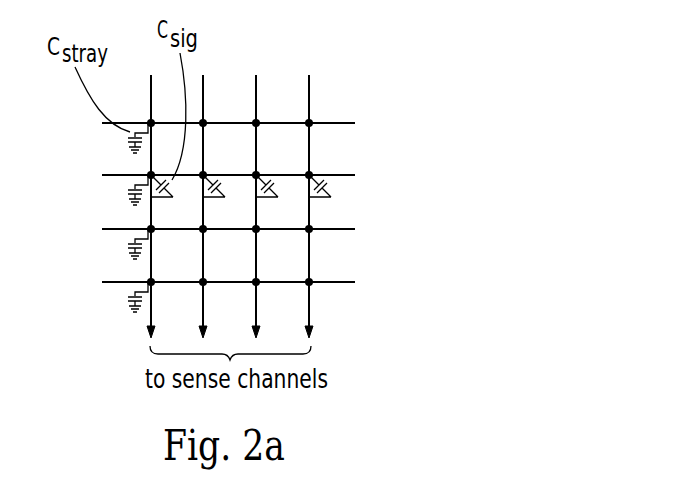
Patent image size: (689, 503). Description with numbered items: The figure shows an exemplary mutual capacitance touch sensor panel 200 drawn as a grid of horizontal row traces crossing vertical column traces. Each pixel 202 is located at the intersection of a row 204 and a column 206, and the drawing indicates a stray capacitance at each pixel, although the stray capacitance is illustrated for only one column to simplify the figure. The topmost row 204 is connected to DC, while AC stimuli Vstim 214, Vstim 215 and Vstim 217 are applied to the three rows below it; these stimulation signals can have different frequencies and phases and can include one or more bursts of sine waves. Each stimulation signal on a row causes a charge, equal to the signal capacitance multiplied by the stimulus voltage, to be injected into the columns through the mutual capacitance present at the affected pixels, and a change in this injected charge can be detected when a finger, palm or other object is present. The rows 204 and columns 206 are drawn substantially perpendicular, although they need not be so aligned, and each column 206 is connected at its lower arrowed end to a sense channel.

The mutual capacitance touch sensor panel 200 is at (490, 183).
The pixel 202 is at (310, 122).
The row 204 is at (342, 125).
The column 206 is at (310, 212).
The Vstim 214 is at (197, 181).
The Vstim 215 is at (197, 235).
The Vstim 217 is at (197, 288).